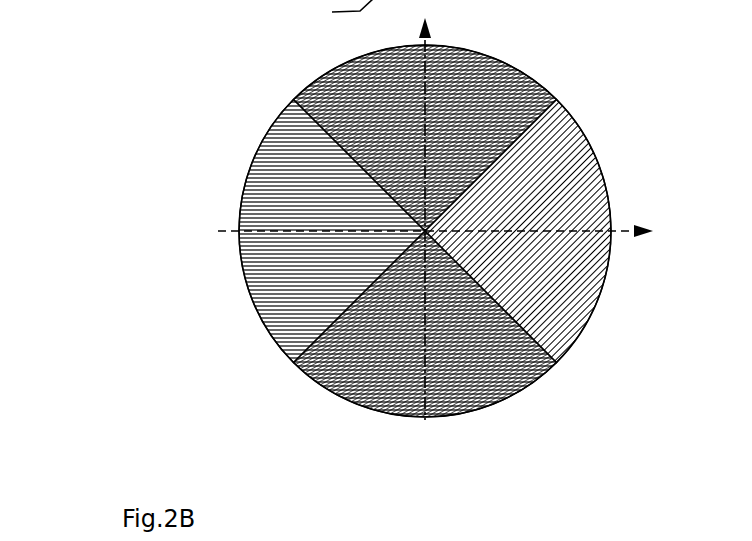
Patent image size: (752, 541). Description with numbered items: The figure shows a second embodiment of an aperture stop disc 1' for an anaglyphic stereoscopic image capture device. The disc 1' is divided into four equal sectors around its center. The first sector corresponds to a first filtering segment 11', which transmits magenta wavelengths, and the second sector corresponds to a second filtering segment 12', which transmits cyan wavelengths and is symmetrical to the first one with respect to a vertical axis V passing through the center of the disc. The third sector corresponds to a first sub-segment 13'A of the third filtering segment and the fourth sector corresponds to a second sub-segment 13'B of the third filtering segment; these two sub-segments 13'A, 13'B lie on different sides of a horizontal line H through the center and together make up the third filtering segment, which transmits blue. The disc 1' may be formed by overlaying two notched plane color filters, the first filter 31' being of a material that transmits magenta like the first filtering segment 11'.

The aperture stop disc 1' is at (344, 211).
The first filtering segment 11' is at (276, 231).
The second filtering segment 12' is at (553, 231).
The first sub-segment of the third filtering segment 13'A is at (454, 115).
The second sub-segment of the third filtering segment 13'B is at (406, 345).
The first plane color filter 31' is at (322, 16).